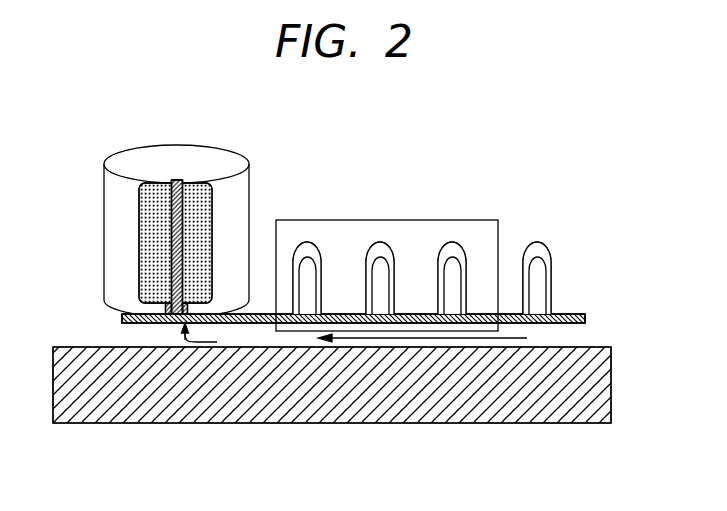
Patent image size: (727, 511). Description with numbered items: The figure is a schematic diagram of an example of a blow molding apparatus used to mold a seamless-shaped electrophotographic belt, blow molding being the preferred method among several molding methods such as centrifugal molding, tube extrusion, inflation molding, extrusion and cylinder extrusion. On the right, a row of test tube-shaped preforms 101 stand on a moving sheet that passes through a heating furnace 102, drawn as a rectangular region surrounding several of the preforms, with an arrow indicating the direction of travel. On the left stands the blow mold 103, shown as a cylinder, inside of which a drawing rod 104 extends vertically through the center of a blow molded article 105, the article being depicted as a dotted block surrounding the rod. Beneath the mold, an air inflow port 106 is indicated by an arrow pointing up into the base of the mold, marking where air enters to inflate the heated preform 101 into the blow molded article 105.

The preform 101 is at (551, 263).
The heating furnace 102 is at (350, 232).
The blow mold 103 is at (226, 168).
The drawing rod 104 is at (168, 201).
The blow molded article 105 is at (150, 253).
The air inflow port 106 is at (207, 342).